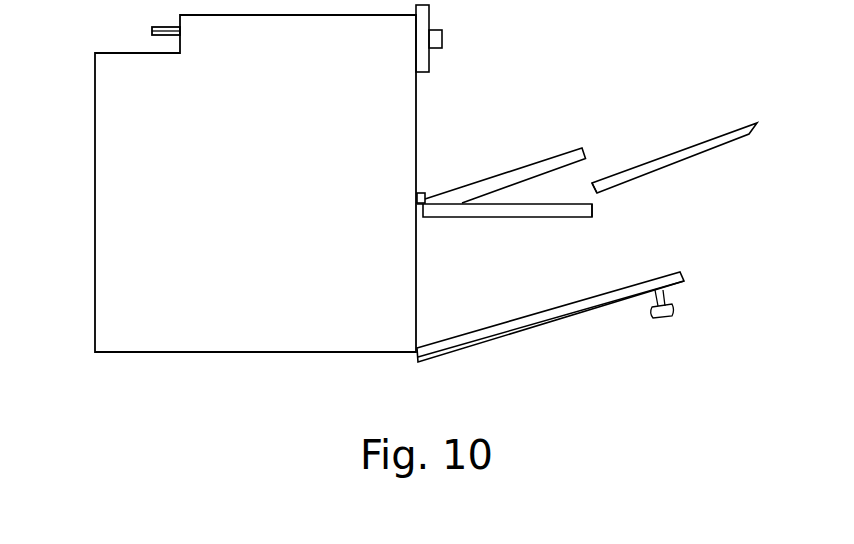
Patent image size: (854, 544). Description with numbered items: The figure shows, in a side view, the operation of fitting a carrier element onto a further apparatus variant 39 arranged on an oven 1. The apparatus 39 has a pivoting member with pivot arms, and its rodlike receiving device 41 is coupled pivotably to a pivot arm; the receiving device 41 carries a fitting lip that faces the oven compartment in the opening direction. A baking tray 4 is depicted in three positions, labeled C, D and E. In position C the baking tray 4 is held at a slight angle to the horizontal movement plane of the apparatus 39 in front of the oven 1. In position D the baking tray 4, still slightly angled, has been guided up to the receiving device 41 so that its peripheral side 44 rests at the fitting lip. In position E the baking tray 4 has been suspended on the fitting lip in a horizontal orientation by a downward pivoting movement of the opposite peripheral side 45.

The oven 1 is at (125, 362).
The apparatus variant 39 is at (449, 100).
The receiving device 41 is at (423, 193).
The baking tray 4 is at (510, 180).
The peripheral side 44 is at (578, 197).
The peripheral side 45 is at (608, 212).